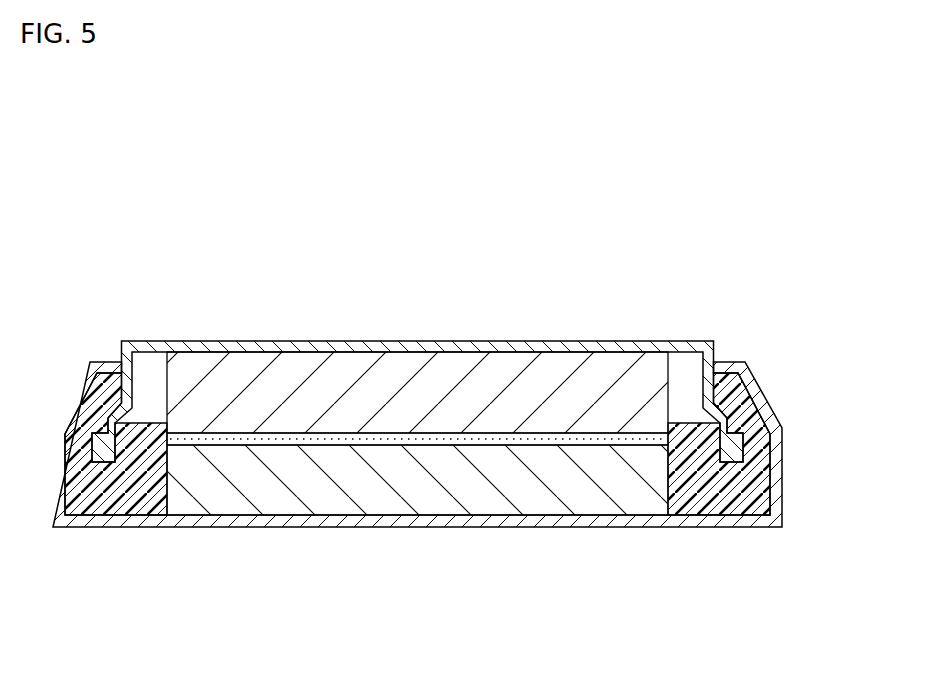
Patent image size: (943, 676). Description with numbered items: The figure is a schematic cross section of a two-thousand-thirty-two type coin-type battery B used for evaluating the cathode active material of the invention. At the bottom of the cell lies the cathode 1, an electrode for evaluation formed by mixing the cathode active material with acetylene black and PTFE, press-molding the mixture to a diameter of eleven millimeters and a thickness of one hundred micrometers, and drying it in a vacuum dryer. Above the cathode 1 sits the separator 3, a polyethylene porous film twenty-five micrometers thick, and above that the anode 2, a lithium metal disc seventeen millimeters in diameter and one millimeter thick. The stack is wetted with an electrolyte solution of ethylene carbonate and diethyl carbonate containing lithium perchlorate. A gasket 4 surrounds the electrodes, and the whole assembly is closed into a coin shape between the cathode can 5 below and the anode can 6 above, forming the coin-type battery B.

The 2032 type coin-type battery B is at (693, 278).
The cathode 1 is at (382, 498).
The anode 2 is at (385, 375).
The separator 3 is at (512, 441).
The gasket 4 is at (708, 500).
The cathode can 5 is at (213, 523).
The anode can 6 is at (230, 341).